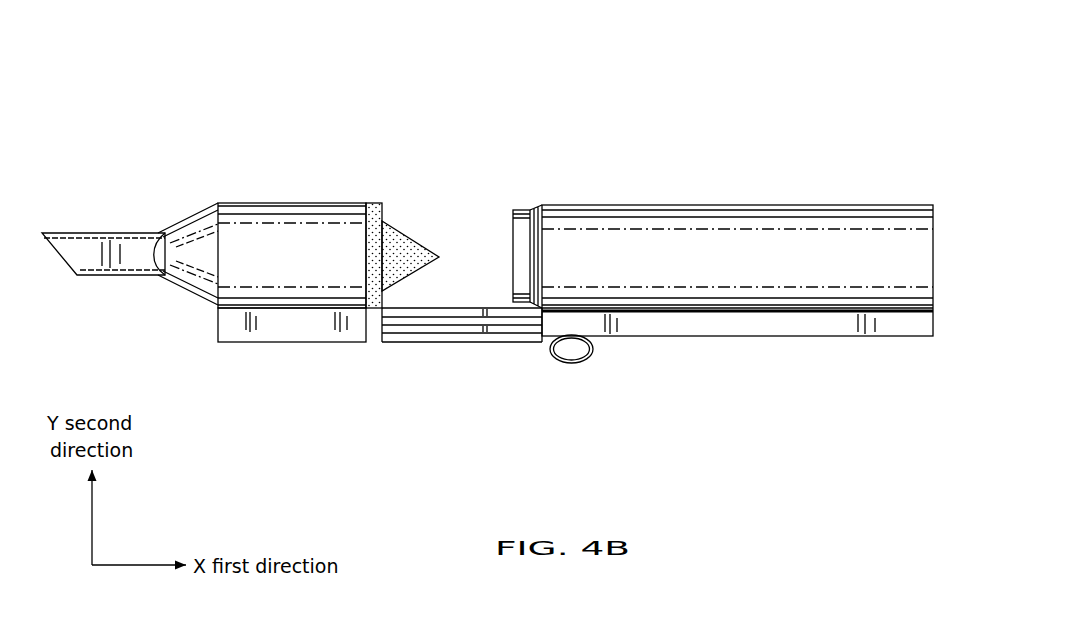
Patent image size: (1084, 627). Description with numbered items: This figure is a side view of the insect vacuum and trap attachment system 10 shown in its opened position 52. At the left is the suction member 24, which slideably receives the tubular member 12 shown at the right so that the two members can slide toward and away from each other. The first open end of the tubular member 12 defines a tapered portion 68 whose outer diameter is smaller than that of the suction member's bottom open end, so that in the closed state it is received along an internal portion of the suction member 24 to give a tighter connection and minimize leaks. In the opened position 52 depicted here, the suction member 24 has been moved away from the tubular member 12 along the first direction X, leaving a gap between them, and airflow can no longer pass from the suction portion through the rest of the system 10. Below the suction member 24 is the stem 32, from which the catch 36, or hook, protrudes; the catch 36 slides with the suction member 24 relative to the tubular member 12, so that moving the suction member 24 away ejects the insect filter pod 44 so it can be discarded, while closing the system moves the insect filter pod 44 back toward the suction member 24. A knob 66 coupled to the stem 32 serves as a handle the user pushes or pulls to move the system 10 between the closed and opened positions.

The insect vacuum and trap attachment system 10 is at (183, 156).
The suction member 24 is at (250, 192).
The opened position 52 is at (336, 190).
The tapered portion 68 is at (522, 240).
The tubular member 12 is at (795, 145).
The stem 32 is at (236, 341).
The insect filter pod 44 is at (373, 292).
The catch 36 is at (387, 312).
The knob 66 is at (578, 363).